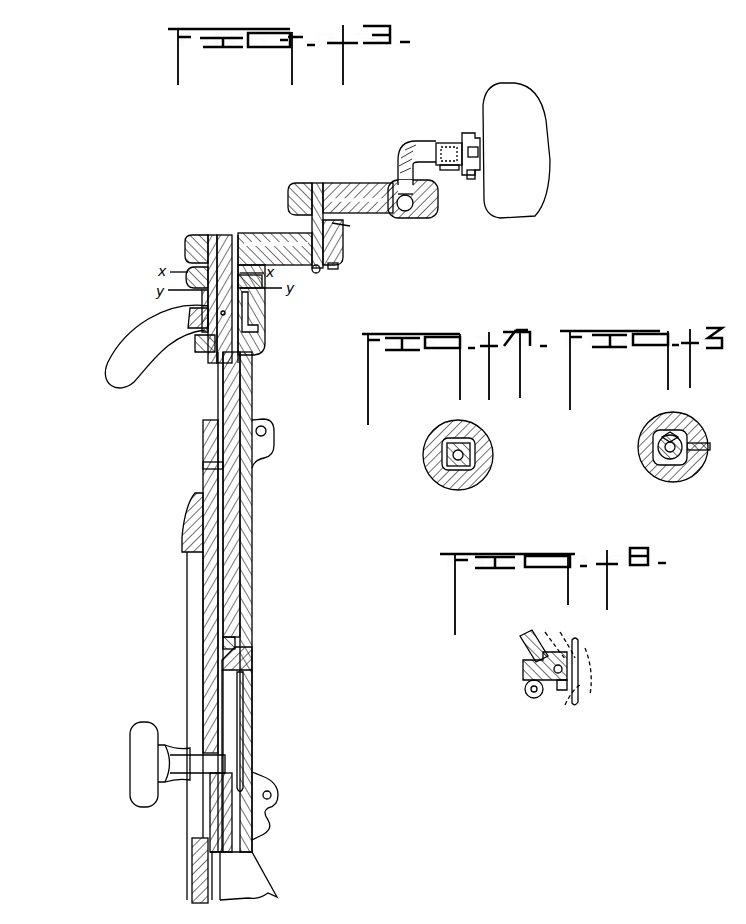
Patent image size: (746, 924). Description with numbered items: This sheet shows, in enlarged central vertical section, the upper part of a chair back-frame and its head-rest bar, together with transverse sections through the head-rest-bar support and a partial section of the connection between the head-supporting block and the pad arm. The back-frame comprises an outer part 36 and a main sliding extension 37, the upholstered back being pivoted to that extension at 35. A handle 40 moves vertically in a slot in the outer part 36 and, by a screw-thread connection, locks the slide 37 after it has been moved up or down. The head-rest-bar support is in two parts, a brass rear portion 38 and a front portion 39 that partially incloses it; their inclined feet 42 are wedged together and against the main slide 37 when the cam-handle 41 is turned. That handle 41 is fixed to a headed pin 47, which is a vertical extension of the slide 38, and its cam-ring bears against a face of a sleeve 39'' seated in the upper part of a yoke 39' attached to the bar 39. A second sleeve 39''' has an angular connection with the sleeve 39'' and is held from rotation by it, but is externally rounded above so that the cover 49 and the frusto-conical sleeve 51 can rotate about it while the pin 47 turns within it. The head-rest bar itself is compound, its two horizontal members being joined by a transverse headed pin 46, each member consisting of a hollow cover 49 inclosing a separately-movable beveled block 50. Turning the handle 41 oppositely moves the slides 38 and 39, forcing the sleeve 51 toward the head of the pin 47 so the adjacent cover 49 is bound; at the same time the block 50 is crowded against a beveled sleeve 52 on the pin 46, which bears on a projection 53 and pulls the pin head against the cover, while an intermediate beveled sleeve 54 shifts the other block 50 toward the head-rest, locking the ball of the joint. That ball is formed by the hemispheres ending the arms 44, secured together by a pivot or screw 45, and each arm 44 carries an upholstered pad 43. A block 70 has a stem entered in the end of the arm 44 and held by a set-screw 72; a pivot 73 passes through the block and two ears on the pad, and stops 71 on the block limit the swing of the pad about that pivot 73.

In FIG. 13, the pivot of upholstered back 35 is at (274, 431).
In FIG. 13, the outer part of back-frame 36 is at (192, 877).
In FIG. 13, the main sliding extension 37 is at (250, 785).
In FIG. 13, the rear portion of head-rest-bar support 38 is at (252, 537).
In FIG. 13, the front portion of head-rest-bar support 39 is at (256, 602).
In FIG. 13, the yoke 39' is at (253, 312).
In FIG. 13, the sleeve 39'' is at (151, 311).
In FIG. 15, the sleeve 39'' is at (650, 447).
In FIG. 13, the sleeve 39''' is at (174, 233).
In FIG. 14, the sleeve 39''' is at (426, 454).
In FIG. 15, the sleeve 39''' is at (642, 462).
In FIG. 13, the handle 40 is at (140, 771).
In FIG. 13, the cam-handle 41 is at (112, 358).
In FIG. 13, the feet or inclined faces 42 is at (252, 652).
In FIG. 13, the upholstered pad 43 is at (530, 128).
In FIG. 13, the arm 44 is at (426, 141).
In FIG. 16, the arm 44 is at (525, 645).
In FIG. 13, the pivot or screw 45 is at (410, 218).
In FIG. 13, the transverse headed pin or bolt 46 is at (315, 183).
In FIG. 13, the pin 47 is at (222, 235).
In FIG. 14, the pin 47 is at (446, 470).
In FIG. 15, the pin 47 is at (682, 462).
In FIG. 13, the hollow cover 49 is at (255, 233).
In FIG. 13, the beveled block 50 is at (343, 246).
In FIG. 13, the frusto-conical sleeve 51 is at (190, 268).
In FIG. 14, the frusto-conical sleeve 51 is at (480, 440).
In FIG. 13, the beveled sleeve 52 is at (334, 269).
In FIG. 13, the projection 53 is at (315, 273).
In FIG. 13, the intermediate beveled sleeve 54 is at (350, 225).
In FIG. 13, the block 70 is at (452, 143).
In FIG. 16, the block 70 is at (558, 690).
In FIG. 13, the stops 71 is at (480, 153).
In FIG. 16, the stops 71 is at (550, 638).
In FIG. 13, the set-screw 72 is at (450, 170).
In FIG. 16, the set-screw 72 is at (525, 690).
In FIG. 13, the pivot 73 is at (471, 179).
In FIG. 16, the pivot 73 is at (567, 668).